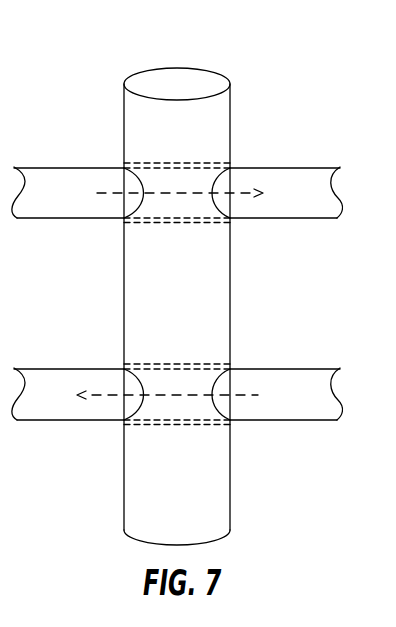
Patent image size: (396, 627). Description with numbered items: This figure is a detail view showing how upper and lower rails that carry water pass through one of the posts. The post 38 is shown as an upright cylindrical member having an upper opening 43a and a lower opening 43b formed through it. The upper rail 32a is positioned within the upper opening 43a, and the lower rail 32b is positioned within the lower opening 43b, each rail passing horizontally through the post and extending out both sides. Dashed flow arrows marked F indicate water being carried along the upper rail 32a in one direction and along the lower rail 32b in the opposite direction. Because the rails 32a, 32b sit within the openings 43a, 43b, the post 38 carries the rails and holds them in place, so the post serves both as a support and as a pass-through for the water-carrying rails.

The post 38 is at (165, 82).
The upper rail 32a is at (289, 168).
The lower rail 32b is at (267, 369).
The upper opening 43a is at (178, 163).
The lower opening 43b is at (189, 365).